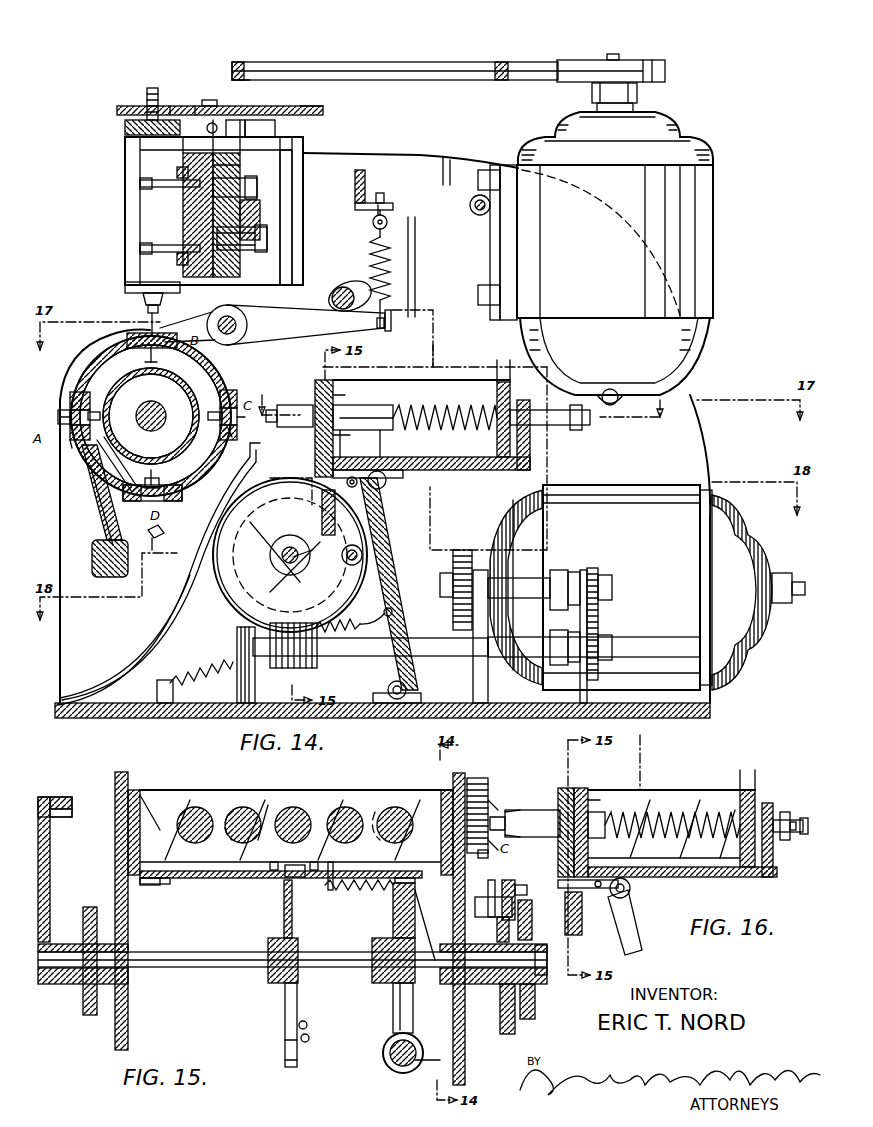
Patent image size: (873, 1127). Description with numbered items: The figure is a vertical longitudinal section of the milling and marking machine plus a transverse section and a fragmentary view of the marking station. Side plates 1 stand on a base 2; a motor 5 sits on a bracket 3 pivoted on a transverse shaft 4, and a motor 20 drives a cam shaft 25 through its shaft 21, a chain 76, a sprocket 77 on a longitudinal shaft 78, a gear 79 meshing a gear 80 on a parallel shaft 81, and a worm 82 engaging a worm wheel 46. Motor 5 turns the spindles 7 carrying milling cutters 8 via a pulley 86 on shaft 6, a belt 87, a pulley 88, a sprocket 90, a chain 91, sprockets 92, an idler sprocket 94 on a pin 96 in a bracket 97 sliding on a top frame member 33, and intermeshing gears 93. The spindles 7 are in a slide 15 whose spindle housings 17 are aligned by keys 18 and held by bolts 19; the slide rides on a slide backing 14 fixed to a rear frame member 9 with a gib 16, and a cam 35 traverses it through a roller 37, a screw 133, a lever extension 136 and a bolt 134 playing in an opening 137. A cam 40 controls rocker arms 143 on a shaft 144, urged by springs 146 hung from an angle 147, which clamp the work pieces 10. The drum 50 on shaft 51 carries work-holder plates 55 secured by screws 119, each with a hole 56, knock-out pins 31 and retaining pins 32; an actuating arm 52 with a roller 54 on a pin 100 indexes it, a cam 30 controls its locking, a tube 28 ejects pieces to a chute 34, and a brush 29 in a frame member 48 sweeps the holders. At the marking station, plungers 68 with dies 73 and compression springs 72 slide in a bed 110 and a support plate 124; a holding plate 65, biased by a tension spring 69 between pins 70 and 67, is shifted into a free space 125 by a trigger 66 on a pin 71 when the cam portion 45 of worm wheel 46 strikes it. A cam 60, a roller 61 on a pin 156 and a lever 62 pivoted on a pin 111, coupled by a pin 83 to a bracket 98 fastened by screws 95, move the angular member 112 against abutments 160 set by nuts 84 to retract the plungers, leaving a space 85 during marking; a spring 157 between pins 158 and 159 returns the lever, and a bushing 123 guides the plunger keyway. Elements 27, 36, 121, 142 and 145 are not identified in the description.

In FIG. 14, the side plates 1 is at (428, 155).
In FIG. 15, the side plates 1 is at (115, 1040).
In FIG. 14, the base 2 is at (690, 718).
In FIG. 14, the bracket 3 is at (490, 240).
In FIG. 14, the transverse shaft 4 is at (470, 203).
In FIG. 14, the motor 5 is at (712, 205).
In FIG. 14, the shaft 6 is at (615, 54).
In FIG. 14, the rotatable spindles 7 is at (148, 88).
In FIG. 14, the milling cutters 8 is at (122, 330).
In FIG. 14, the rear frame member 9 is at (240, 126).
In FIG. 14, the work pieces 10 is at (92, 412).
In FIG. 15, the work pieces 10 is at (505, 840).
In FIG. 14, the slide backing 14 is at (235, 300).
In FIG. 14, the slide 15 is at (183, 218).
In FIG. 14, the gib 16 is at (183, 145).
In FIG. 14, the spindle housings 17 is at (125, 205).
In FIG. 14, the keys 18 is at (177, 172).
In FIG. 14, the bolts 19 is at (140, 182).
In FIG. 14, the motor 20 is at (758, 540).
In FIG. 14, the shaft 21 is at (798, 603).
In FIG. 14, the cam shaft 25 is at (268, 562).
In FIG. 15, the cam shaft 25 is at (205, 968).
In FIG. 14, the bolt 27 is at (153, 88).
In FIG. 14, the ejecting tube 28 is at (90, 458).
In FIG. 14, the flexible brush 29 is at (105, 512).
In FIG. 15, the cam 30 is at (83, 1000).
In FIG. 14, the knock-out pins 31 is at (156, 358).
In FIG. 14, the retaining pins 32 is at (148, 364).
In FIG. 14, the transverse top frame member 33 is at (292, 160).
In FIG. 14, the guard or chute 34 is at (165, 615).
In FIG. 15, the cam 35 is at (515, 1020).
In FIG. 15, the block 36 is at (525, 900).
In FIG. 15, the roller 37 is at (493, 919).
In FIG. 15, the cam 40 is at (535, 1000).
In FIG. 14, the cam portion 45 is at (300, 566).
In FIG. 15, the cam portion 45 is at (415, 1000).
In FIG. 14, the worm wheel 46 is at (225, 605).
In FIG. 15, the worm wheel 46 is at (393, 1025).
In FIG. 14, the frame member 48 is at (100, 565).
In FIG. 14, the drum 50 is at (85, 362).
In FIG. 15, the drum 50 is at (478, 778).
In FIG. 14, the transverse shaft 51 is at (143, 425).
In FIG. 15, the actuating arm 52 is at (50, 860).
In FIG. 15, the roller 54 is at (60, 797).
In FIG. 14, the work holders 55 is at (128, 338).
In FIG. 15, the work holders 55 is at (495, 800).
In FIG. 14, the cylindrical hole 56 is at (148, 500).
In FIG. 14, the cam 60 is at (225, 570).
In FIG. 15, the cam 60 is at (285, 1000).
In FIG. 14, the roller 61 is at (354, 567).
In FIG. 14, the actuating lever 62 is at (410, 600).
In FIG. 15, the actuating lever 62 is at (285, 1045).
In FIG. 14, the holding plate 65 is at (325, 380).
In FIG. 15, the holding plate 65 is at (268, 800).
In FIG. 16, the holding plate 65 is at (578, 788).
In FIG. 14, the trigger 66 is at (322, 505).
In FIG. 15, the trigger 66 is at (420, 880).
In FIG. 16, the trigger 66 is at (575, 935).
In FIG. 15, the pin 67 is at (482, 891).
In FIG. 14, the marking plungers 68 is at (380, 405).
In FIG. 15, the marking plungers 68 is at (195, 807).
In FIG. 14, the tension spring 69 is at (370, 490).
In FIG. 15, the tension spring 69 is at (393, 900).
In FIG. 16, the tension spring 69 is at (598, 897).
In FIG. 15, the pin 70 is at (333, 870).
In FIG. 14, the pin 71 is at (333, 460).
In FIG. 15, the pin 71 is at (393, 912).
In FIG. 16, the pin 71 is at (565, 890).
In FIG. 14, the compression springs 72 is at (500, 382).
In FIG. 16, the compression springs 72 is at (745, 790).
In FIG. 14, the die members 73 is at (290, 405).
In FIG. 15, the die members 73 is at (520, 810).
In FIG. 14, the chain 76 is at (462, 550).
In FIG. 14, the sprocket 77 is at (480, 570).
In FIG. 14, the longitudinal shaft 78 is at (522, 578).
In FIG. 14, the gear 79 is at (595, 568).
In FIG. 14, the gear 80 is at (615, 660).
In FIG. 14, the longitudinal shaft 81 is at (450, 656).
In FIG. 15, the longitudinal shaft 81 is at (423, 1068).
In FIG. 14, the worm 82 is at (285, 668).
In FIG. 15, the worm 82 is at (392, 1068).
In FIG. 14, the pin 83 is at (375, 432).
In FIG. 15, the pin 83 is at (297, 859).
In FIG. 16, the pin 83 is at (600, 838).
In FIG. 14, the nuts 84 is at (585, 420).
In FIG. 16, the nuts 84 is at (800, 818).
In FIG. 16, the space 85 is at (785, 812).
In FIG. 14, the pulley 86 is at (660, 60).
In FIG. 14, the belt 87 is at (470, 62).
In FIG. 14, the pulley 88 is at (245, 62).
In FIG. 14, the sprocket 90 is at (323, 110).
In FIG. 14, the chain 91 is at (175, 106).
In FIG. 14, the sprockets 92 is at (125, 108).
In FIG. 14, the gears 93 is at (125, 125).
In FIG. 14, the idler take-up sprocket 94 is at (205, 106).
In FIG. 14, the screws 95 is at (380, 443).
In FIG. 15, the screws 95 is at (272, 862).
In FIG. 14, the pin 96 is at (210, 106).
In FIG. 14, the bracket 97 is at (232, 120).
In FIG. 14, the bracket 98 is at (385, 485).
In FIG. 15, the bracket 98 is at (284, 890).
In FIG. 15, the pin 100 is at (72, 805).
In FIG. 14, the bed member 110 is at (450, 380).
In FIG. 15, the bed member 110 is at (135, 790).
In FIG. 16, the bed member 110 is at (665, 790).
In FIG. 14, the pin 111 is at (410, 690).
In FIG. 14, the angular member 112 is at (490, 457).
In FIG. 16, the angular member 112 is at (773, 880).
In FIG. 14, the screws 119 is at (70, 440).
In FIG. 14, the wall 121 is at (499, 352).
In FIG. 16, the wall 121 is at (753, 761).
In FIG. 14, the bushing 123 is at (450, 345).
In FIG. 16, the bushing 123 is at (662, 759).
In FIG. 14, the support plate 124 is at (330, 395).
In FIG. 16, the support plate 124 is at (575, 788).
In FIG. 15, the free space 125 is at (155, 800).
In FIG. 14, the screw 133 is at (267, 238).
In FIG. 14, the bolt 134 is at (240, 165).
In FIG. 14, the lever extension 136 is at (260, 212).
In FIG. 14, the opening 137 is at (275, 130).
In FIG. 14, the roller 142 is at (338, 286).
In FIG. 14, the rocker arms 143 is at (190, 322).
In FIG. 14, the transverse shaft 144 is at (250, 312).
In FIG. 14, the rod 145 is at (376, 275).
In FIG. 14, the vertical springs 146 is at (395, 252).
In FIG. 14, the angle 147 is at (393, 203).
In FIG. 14, the pin 156 is at (473, 459).
In FIG. 14, the tension spring 157 is at (205, 665).
In FIG. 15, the tension spring 157 is at (310, 1040).
In FIG. 14, the pin 158 is at (167, 681).
In FIG. 14, the pin 159 is at (392, 615).
In FIG. 15, the pin 159 is at (310, 1022).
In FIG. 14, the abutments 160 is at (606, 390).
In FIG. 16, the abutments 160 is at (795, 812).